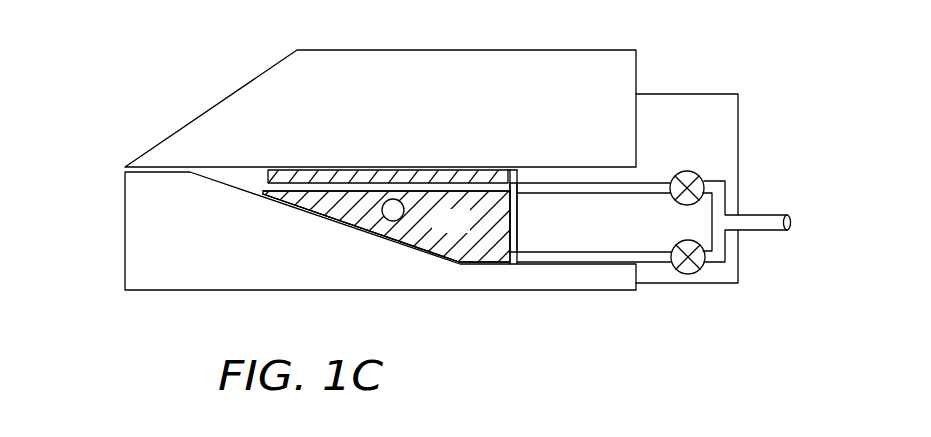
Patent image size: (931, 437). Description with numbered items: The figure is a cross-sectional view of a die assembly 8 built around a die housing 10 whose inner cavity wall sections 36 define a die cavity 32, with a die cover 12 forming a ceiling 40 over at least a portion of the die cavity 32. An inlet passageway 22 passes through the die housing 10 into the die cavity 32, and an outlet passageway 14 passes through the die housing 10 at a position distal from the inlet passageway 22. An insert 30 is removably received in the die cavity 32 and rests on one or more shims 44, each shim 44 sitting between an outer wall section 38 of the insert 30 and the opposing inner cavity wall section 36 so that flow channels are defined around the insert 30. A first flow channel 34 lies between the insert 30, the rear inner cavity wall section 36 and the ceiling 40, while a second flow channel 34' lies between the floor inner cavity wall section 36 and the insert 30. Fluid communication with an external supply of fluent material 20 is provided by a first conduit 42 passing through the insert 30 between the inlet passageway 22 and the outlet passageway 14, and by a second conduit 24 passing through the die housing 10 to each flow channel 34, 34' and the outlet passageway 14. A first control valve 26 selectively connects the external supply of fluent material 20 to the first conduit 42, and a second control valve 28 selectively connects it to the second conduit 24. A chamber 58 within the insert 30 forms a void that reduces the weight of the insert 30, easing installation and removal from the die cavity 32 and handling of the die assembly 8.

The die assembly 8 is at (204, 43).
The die housing 10 is at (210, 247).
The die cover 12 is at (490, 100).
The outlet passageway 14 is at (123, 169).
The external supply of fluent material 20 is at (767, 232).
The inlet passageway 22 is at (617, 190).
The second conduit 24 is at (613, 257).
The first control valve 26 is at (693, 171).
The second control valve 28 is at (688, 274).
The insert 30 is at (437, 234).
The die cavity 32 is at (242, 177).
The first flow channel 34 is at (501, 166).
The second flow channel 34' is at (398, 291).
The inner cavity wall section 36 is at (498, 167).
The outer wall section 38 is at (501, 213).
The ceiling 40 is at (327, 170).
The first conduit 42 is at (358, 190).
The shim 44 is at (302, 207).
The chamber 58 is at (391, 222).